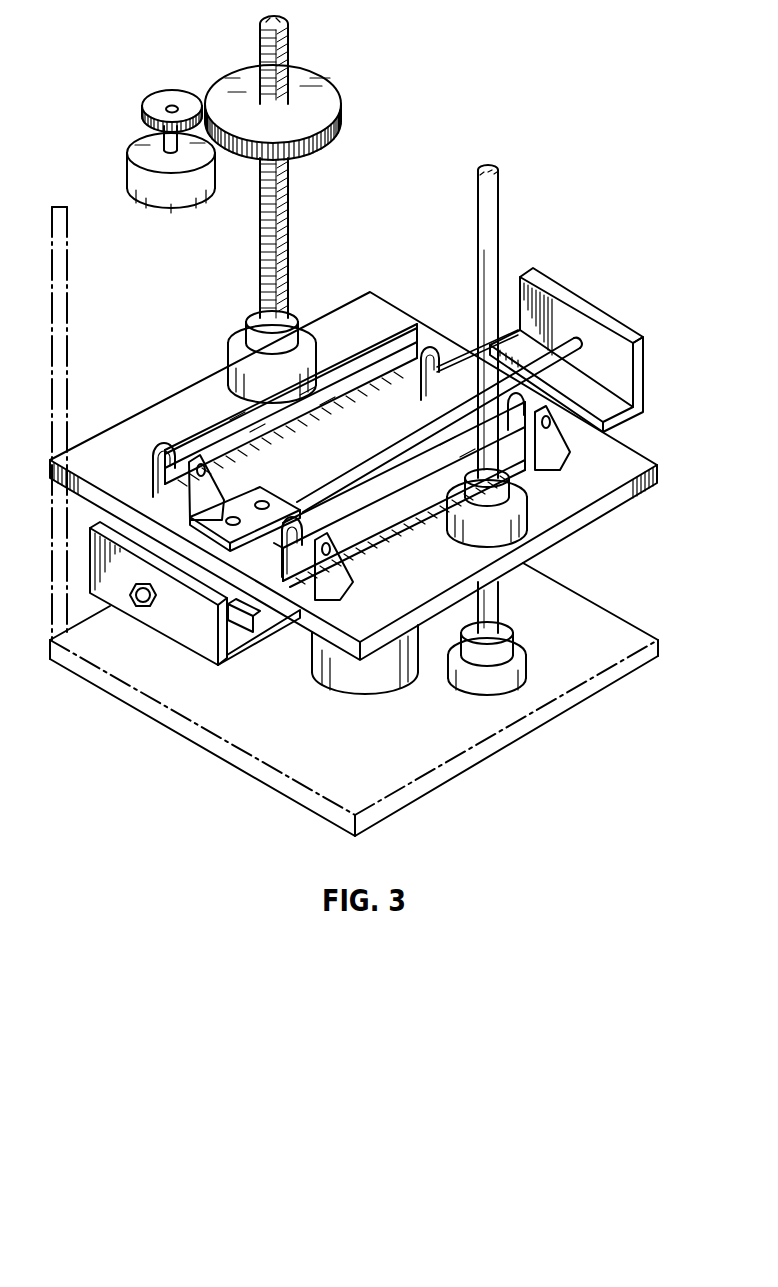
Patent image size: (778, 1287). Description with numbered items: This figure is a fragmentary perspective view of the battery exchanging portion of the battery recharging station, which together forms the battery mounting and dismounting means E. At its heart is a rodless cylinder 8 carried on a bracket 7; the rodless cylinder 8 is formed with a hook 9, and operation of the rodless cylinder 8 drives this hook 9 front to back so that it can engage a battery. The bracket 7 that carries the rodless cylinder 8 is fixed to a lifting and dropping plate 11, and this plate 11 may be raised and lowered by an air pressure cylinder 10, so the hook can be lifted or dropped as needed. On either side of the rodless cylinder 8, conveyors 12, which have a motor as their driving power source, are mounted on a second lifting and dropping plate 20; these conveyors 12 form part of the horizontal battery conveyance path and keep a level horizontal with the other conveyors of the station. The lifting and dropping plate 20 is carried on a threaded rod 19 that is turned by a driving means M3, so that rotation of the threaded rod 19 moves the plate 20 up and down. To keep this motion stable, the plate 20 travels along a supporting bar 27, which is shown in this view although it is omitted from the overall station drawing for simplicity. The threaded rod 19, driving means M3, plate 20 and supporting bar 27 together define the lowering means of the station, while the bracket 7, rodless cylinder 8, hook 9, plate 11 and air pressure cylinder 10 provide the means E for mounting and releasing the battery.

The battery mounting and dismounting means E is at (92, 712).
The driving means M3 is at (138, 176).
The threaded rod 19 is at (288, 236).
The conveyors 12 is at (343, 372).
The supporting bar 27 is at (490, 250).
The bracket 7 is at (637, 369).
The rodless cylinder 8 is at (563, 356).
The hook 9 is at (150, 483).
The lifting and dropping plate 20 is at (603, 505).
The air pressure cylinder 10 is at (408, 668).
The lifting and dropping plate 11 is at (184, 645).